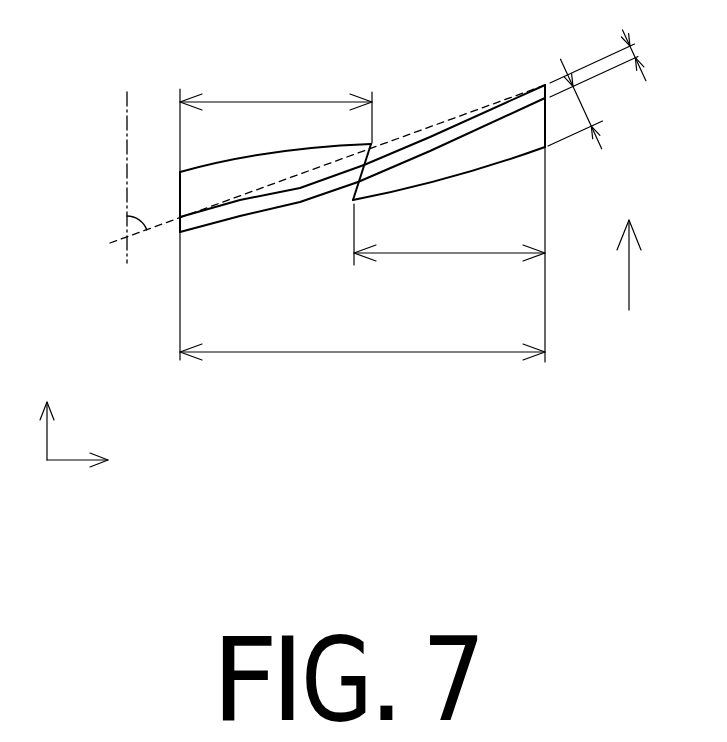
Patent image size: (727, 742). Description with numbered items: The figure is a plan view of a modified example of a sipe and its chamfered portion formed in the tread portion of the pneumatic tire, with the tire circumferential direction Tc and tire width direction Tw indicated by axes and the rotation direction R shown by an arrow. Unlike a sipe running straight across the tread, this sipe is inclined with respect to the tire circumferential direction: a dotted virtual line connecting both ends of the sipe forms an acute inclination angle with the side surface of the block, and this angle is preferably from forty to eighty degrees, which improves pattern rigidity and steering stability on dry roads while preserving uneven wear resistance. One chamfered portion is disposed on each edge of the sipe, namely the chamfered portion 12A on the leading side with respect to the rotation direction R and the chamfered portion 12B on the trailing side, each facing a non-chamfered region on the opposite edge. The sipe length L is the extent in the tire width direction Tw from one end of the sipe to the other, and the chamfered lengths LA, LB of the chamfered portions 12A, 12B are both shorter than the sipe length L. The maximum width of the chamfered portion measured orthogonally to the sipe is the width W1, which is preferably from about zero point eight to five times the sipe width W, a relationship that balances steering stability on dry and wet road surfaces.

The chamfered portion 12A is at (275, 172).
The chamfered portion 12B is at (460, 163).
The sipe length L is at (362, 225).
The chamfered length LA is at (276, 103).
The chamfered length LB is at (449, 234).
The sipe width W is at (608, 59).
The maximum width of the chamfered portion W1 is at (587, 104).
The rotation direction R is at (629, 240).
The tire circumferential direction Tc is at (47, 407).
The tire width direction Tw is at (98, 464).